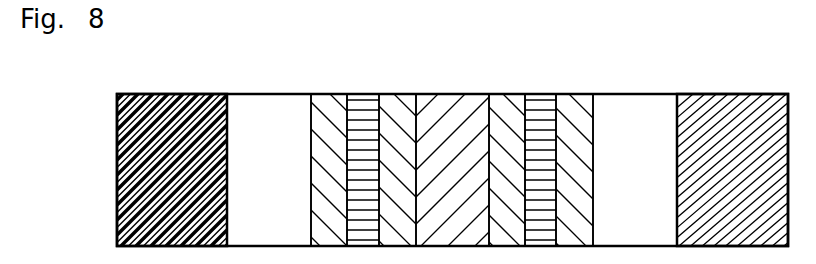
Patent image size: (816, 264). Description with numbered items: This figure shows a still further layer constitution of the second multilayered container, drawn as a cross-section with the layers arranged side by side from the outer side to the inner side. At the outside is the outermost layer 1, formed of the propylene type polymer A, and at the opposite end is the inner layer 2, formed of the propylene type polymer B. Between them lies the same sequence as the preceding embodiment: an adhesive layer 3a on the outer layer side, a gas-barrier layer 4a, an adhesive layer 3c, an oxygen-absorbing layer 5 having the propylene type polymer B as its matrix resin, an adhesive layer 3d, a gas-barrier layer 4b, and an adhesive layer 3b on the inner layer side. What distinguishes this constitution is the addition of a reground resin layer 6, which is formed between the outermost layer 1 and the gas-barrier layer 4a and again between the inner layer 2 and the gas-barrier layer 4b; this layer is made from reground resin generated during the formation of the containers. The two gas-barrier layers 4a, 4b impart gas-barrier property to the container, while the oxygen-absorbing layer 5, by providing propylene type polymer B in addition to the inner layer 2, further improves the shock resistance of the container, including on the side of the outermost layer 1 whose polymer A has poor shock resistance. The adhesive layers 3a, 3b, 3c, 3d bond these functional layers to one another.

The outermost layer 1 is at (174, 107).
The inner layer 2 is at (733, 107).
The adhesive layer on the outer layer side 3a is at (333, 107).
The adhesive layer on the inner layer side 3b is at (575, 107).
The adhesive layer 3c is at (400, 107).
The adhesive layer 3d is at (507, 107).
The gas-barrier layer 4a is at (367, 107).
The gas-barrier layer 4b is at (543, 107).
The oxygen-absorbing layer 5 is at (458, 107).
The reground resin layer 6 is at (269, 107).